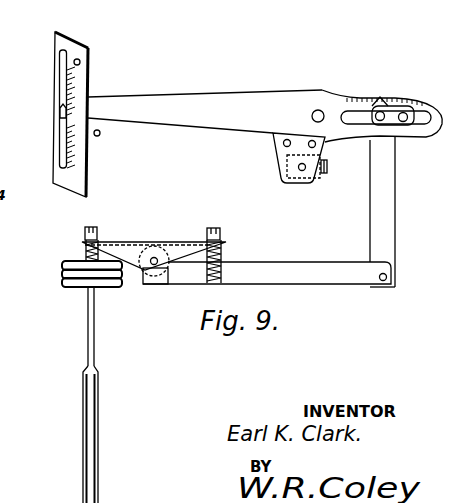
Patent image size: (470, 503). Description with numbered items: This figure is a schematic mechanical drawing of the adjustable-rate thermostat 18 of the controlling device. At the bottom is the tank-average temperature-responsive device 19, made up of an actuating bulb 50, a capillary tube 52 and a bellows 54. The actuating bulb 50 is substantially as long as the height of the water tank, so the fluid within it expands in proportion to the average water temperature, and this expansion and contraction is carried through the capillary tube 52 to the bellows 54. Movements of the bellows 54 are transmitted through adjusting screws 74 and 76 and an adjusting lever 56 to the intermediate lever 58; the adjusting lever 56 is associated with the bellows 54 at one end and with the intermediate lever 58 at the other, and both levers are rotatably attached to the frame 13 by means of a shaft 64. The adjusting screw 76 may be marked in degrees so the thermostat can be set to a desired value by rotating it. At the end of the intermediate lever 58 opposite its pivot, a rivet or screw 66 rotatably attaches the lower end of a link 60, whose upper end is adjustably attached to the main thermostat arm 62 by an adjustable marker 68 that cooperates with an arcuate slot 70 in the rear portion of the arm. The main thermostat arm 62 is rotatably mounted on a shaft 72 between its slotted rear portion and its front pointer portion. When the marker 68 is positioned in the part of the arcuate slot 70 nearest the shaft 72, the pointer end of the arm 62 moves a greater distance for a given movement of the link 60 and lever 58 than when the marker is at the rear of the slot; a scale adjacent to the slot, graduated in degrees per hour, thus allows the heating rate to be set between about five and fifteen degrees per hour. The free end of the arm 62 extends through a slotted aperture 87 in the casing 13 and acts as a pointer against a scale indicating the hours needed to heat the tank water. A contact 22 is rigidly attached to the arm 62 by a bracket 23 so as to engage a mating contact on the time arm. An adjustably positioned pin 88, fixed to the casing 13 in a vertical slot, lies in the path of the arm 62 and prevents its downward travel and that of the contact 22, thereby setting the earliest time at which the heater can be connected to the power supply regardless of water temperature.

The frame 13 is at (55, 36).
The slotted aperture 87 is at (72, 43).
The pin 88 is at (100, 135).
The adjustable-rate thermostat 18 is at (205, 112).
The main thermostat arm 62 is at (193, 97).
The arcuate slot 70 is at (427, 134).
The shaft 72 is at (317, 110).
The adjustable marker 68 is at (370, 106).
The contact 22 is at (328, 167).
The bracket 23 is at (313, 183).
The link 60 is at (396, 197).
The intermediate lever 58 is at (287, 267).
The rivet or screw 66 is at (387, 277).
The adjusting lever 56 is at (123, 245).
The shaft 64 is at (148, 270).
The adjusting screw 74 is at (85, 235).
The adjusting screw 76 is at (220, 234).
The bellows 54 is at (62, 273).
The tank-average temperature-responsive device 19 is at (82, 395).
The capillary tube 52 is at (88, 313).
The actuating bulb 50 is at (100, 444).